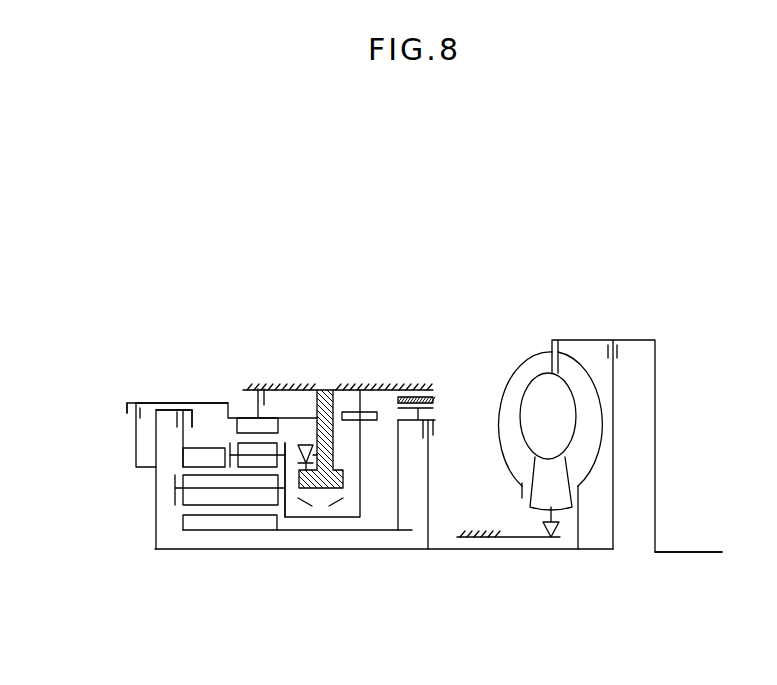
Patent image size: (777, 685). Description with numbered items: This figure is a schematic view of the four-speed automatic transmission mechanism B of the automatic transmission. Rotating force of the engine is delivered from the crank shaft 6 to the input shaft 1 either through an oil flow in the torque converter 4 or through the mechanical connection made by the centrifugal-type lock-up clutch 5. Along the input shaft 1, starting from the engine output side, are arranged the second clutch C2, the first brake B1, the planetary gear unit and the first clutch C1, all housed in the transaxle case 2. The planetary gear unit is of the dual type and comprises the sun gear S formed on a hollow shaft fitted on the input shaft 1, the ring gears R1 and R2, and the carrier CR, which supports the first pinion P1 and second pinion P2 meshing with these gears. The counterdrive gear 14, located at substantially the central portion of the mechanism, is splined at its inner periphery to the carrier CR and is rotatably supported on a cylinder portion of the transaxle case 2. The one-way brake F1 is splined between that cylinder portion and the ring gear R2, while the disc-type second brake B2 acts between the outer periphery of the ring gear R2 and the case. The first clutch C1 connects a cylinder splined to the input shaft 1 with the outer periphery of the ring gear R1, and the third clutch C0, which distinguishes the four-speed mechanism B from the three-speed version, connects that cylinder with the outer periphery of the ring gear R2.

The third clutch C0 is at (128, 405).
The first clutch C1 is at (177, 418).
The second clutch C2 is at (435, 430).
The transaxle case 2 is at (213, 423).
The ring gear R1 is at (197, 460).
The ring gear R2 is at (270, 428).
The second brake B2 is at (252, 392).
The first brake B1 is at (437, 397).
The one-way brake F1 is at (306, 445).
The counterdrive gear 14 is at (362, 412).
The four-speed automatic transmission mechanism B is at (365, 277).
The first pinion P1 is at (202, 498).
The second pinion P2 is at (252, 462).
The sun gear S is at (218, 522).
The carrier CR is at (283, 528).
The input shaft 1 is at (398, 550).
The torque converter 4 is at (525, 358).
The lock-up clutch 5 is at (620, 350).
The crank shaft 6 is at (680, 552).